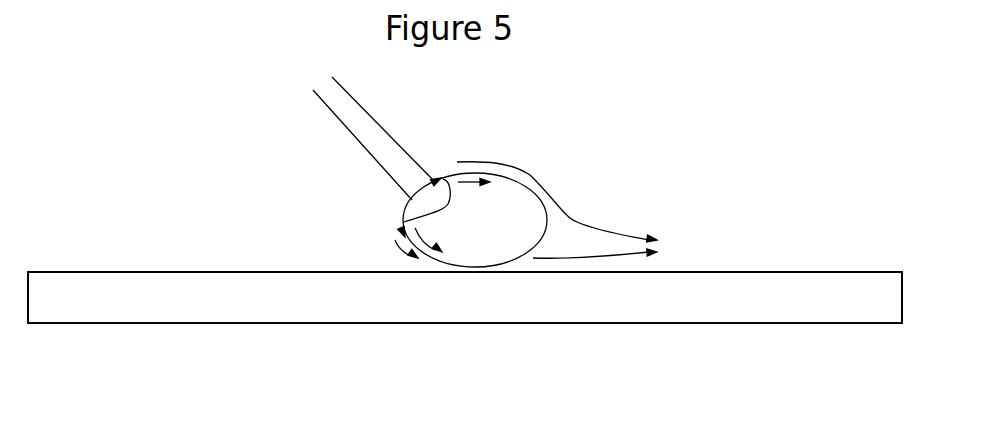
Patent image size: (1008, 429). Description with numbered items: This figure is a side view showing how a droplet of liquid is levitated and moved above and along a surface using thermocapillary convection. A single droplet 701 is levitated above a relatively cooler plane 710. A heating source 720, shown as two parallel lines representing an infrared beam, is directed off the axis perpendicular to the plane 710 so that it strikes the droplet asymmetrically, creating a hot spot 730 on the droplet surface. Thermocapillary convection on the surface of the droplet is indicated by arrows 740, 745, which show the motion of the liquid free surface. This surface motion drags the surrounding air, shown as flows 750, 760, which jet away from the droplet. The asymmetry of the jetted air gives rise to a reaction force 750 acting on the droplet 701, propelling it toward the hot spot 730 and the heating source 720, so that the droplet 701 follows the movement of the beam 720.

The droplet 701 is at (503, 212).
The plane 710 is at (422, 305).
The heating source 720 is at (373, 137).
The hot spot 730 is at (420, 210).
The thermocapillary convection arrow 740 is at (443, 172).
The thermocapillary convection arrow 745 is at (400, 232).
The reaction force 750 is at (387, 245).
The surrounding air flow 760 is at (660, 247).